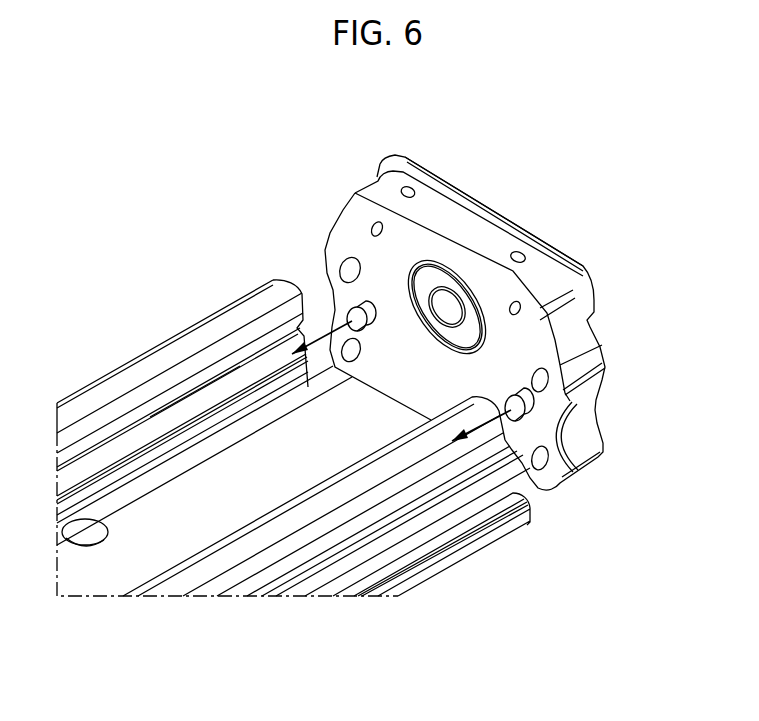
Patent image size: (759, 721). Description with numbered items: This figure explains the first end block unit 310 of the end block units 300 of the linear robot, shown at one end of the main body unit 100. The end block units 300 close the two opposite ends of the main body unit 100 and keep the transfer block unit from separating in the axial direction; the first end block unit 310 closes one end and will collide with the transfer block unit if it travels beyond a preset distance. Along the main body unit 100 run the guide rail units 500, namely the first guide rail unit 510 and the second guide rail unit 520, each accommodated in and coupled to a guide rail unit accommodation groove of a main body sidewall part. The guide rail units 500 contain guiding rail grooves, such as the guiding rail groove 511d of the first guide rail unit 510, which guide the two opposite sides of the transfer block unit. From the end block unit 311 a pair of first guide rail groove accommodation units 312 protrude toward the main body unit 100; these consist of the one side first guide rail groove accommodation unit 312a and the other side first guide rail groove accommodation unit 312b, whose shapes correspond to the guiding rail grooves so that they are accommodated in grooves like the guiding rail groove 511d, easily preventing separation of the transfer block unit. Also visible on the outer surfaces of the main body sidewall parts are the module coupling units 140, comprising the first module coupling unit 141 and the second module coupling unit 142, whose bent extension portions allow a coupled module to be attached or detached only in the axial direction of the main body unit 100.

The main body unit 100 is at (320, 615).
The module coupling units 140 is at (293, 455).
The first module coupling unit 141 is at (148, 330).
The second module coupling unit 142 is at (467, 580).
The end block units 300 is at (497, 281).
The first end block unit 310 is at (562, 225).
The end block unit 311 is at (470, 218).
The first guide rail groove accommodation units 312 is at (497, 256).
The one side first guide rail groove accommodation unit 312a is at (368, 305).
The other side first guide rail groove accommodation unit 312b is at (523, 407).
The guide rail units 500 is at (283, 413).
The first guide rail unit 510 is at (252, 345).
The second guide rail unit 520 is at (262, 507).
The guiding rail groove 511d is at (240, 390).